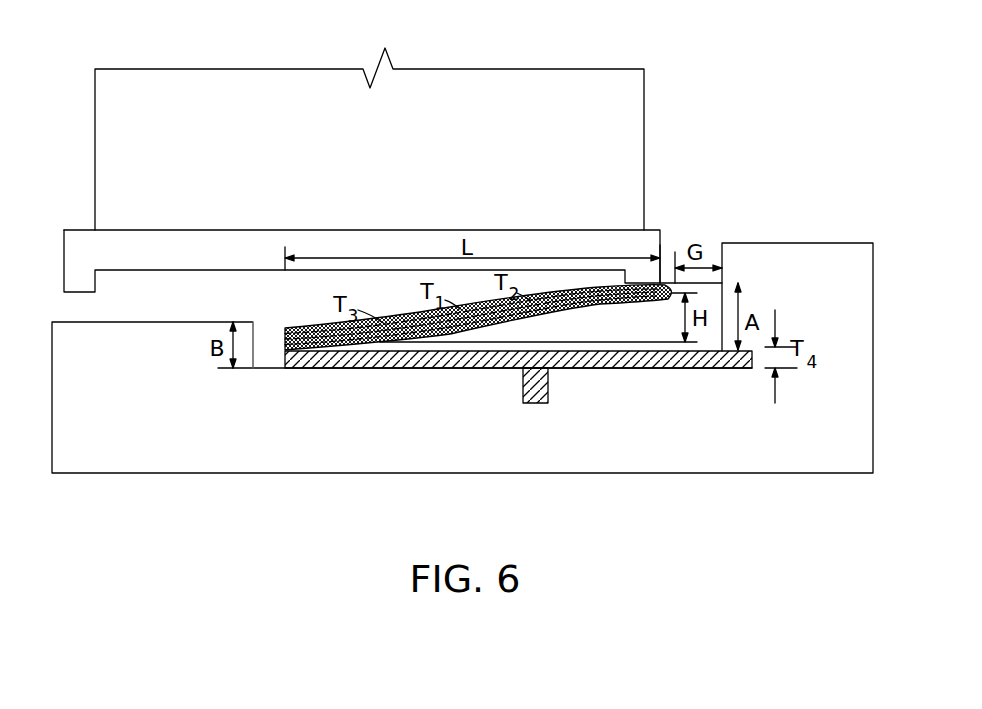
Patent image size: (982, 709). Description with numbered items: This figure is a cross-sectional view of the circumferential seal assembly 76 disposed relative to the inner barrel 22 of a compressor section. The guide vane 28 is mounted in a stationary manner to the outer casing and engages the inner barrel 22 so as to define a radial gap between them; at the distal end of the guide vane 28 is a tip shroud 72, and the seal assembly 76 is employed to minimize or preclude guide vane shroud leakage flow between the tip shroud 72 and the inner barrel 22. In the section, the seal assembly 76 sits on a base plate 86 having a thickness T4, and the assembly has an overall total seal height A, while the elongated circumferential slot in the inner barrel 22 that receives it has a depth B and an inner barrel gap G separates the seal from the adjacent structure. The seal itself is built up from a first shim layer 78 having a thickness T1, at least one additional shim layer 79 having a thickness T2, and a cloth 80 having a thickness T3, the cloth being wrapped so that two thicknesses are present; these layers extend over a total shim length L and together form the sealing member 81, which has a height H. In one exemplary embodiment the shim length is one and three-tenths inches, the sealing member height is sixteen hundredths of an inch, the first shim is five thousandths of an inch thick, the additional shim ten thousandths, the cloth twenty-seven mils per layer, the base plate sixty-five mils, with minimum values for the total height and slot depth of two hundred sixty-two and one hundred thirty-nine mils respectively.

The inner barrel 22 is at (633, 474).
The guide vane 28 is at (644, 107).
The tip shroud 72 is at (80, 232).
The circumferential seal assembly 76 is at (270, 315).
The first shim layer 78 is at (663, 310).
The additional shim layer 79 is at (593, 310).
The cloth 80 is at (578, 287).
The sealing member 81 is at (505, 322).
The base plate 86 is at (586, 370).